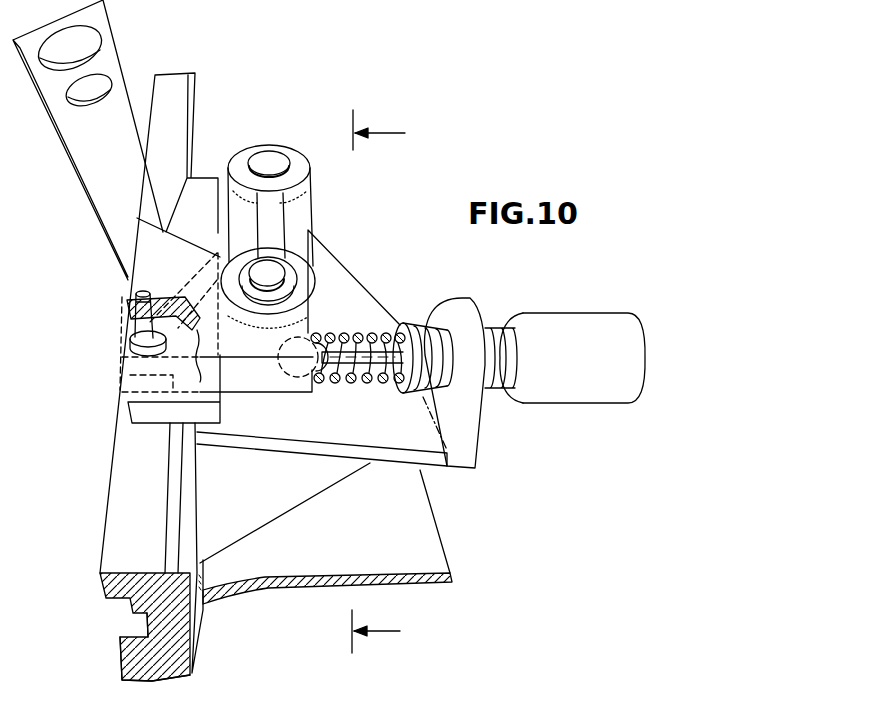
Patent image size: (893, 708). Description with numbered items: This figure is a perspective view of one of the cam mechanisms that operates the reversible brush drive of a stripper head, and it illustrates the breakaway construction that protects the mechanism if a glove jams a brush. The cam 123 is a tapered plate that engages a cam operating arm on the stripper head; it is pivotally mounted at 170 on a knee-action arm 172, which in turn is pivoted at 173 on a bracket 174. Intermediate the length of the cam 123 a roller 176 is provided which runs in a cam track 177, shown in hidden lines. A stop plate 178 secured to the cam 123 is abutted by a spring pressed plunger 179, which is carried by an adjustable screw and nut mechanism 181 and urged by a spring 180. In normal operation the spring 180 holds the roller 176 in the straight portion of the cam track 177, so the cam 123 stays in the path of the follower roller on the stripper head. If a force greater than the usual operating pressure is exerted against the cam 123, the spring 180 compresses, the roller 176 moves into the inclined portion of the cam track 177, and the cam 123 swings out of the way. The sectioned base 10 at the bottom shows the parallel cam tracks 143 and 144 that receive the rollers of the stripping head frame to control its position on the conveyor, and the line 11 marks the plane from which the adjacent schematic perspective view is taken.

The base 10 is at (442, 543).
The section line 11- 11 is at (391, 381).
The cam 123 is at (125, 58).
The cam track 143 is at (120, 600).
The cam track 144 is at (150, 628).
The pivot 170 is at (282, 276).
The knee-action arm 172 is at (340, 232).
The pivot 173 is at (295, 132).
The bracket 174 is at (390, 458).
The roller 176 is at (122, 339).
The cam track 177 is at (203, 295).
The stop plate 178 is at (313, 380).
The spring pressed plunger 179 is at (357, 355).
The spring 180 is at (368, 380).
The adjustable screw and nut mechanism 181 is at (600, 400).